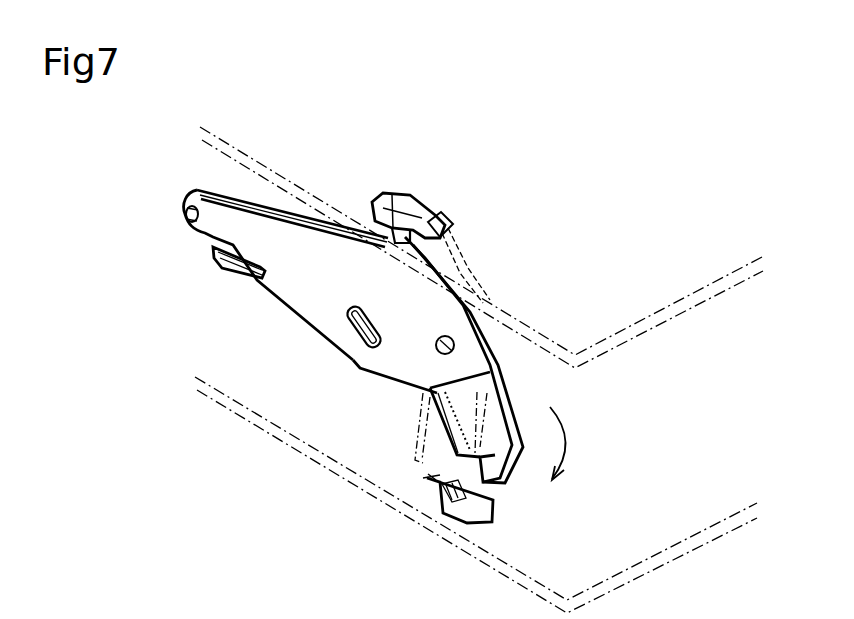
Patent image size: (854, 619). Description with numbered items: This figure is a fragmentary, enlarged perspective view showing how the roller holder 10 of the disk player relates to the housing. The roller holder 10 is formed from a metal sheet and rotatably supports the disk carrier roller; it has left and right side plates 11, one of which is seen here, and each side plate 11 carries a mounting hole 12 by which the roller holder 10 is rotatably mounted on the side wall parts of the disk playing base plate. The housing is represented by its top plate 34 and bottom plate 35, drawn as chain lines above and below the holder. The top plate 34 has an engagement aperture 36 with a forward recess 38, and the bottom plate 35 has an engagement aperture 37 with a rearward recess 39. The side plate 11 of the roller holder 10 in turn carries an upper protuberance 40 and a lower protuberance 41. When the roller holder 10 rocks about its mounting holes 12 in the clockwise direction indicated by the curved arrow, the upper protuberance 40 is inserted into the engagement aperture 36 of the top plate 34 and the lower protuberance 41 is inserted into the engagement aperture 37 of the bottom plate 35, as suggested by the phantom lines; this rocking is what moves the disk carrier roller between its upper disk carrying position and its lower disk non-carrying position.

The roller holder 10 is at (266, 293).
The side plate 11 is at (390, 358).
The mounting hole 12 is at (440, 350).
The top plate 34 is at (600, 291).
The bottom plate 35 is at (650, 531).
The engagement aperture 36 is at (394, 207).
The engagement aperture 37 is at (481, 512).
The forward recess 38 is at (455, 232).
The rearward recess 39 is at (428, 478).
The upper protuberance 40 is at (393, 243).
The lower protuberance 41 is at (507, 473).